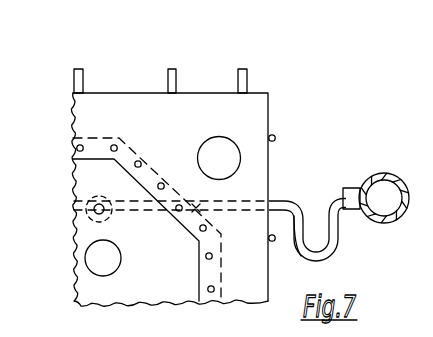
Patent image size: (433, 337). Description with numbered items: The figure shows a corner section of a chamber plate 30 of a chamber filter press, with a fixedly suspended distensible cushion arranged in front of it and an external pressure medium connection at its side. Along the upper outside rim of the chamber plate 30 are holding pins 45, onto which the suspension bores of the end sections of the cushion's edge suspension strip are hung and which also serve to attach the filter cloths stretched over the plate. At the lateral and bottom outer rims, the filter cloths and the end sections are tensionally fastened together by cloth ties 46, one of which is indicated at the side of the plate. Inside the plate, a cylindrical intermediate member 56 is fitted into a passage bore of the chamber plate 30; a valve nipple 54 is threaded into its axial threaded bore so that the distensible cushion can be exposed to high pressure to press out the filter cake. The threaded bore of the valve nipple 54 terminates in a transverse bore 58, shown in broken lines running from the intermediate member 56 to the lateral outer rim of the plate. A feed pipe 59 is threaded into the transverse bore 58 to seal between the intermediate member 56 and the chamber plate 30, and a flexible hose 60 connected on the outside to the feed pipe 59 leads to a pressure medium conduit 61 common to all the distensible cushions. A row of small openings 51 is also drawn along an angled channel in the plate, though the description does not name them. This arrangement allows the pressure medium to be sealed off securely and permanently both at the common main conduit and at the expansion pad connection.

The chamber plate 30 is at (249, 121).
The holding pins 45 is at (176, 83).
The cloth ties 46 is at (273, 241).
The holes 51 is at (140, 161).
The valve nipple 54 is at (94, 201).
The intermediate member 56 is at (108, 214).
The transverse bore 58 is at (216, 200).
The feed pipe 59 is at (277, 199).
The flexible hose 60 is at (301, 222).
The pressure medium conduit 61 is at (377, 173).